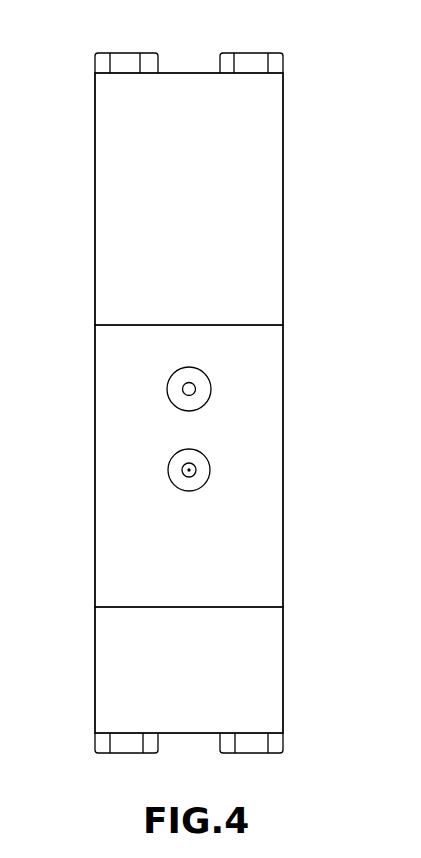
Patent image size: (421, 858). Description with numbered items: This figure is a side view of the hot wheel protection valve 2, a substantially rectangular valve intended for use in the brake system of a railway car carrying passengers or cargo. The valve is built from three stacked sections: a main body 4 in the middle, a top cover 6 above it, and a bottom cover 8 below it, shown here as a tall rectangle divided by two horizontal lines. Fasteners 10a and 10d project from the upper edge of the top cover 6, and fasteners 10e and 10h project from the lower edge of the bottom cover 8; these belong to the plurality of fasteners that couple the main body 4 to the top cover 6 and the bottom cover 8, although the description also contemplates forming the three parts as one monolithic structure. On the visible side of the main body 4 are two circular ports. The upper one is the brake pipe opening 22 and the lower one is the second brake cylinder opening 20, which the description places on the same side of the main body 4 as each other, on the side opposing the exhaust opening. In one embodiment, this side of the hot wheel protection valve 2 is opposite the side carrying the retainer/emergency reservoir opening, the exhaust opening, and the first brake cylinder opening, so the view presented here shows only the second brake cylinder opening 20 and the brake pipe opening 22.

The hot wheel protection valve 2 is at (297, 126).
The main body 4 is at (270, 397).
The top cover 6 is at (268, 222).
The bottom cover 8 is at (273, 668).
The fastener 10a is at (118, 62).
The fastener 10d is at (247, 62).
The fastener 10e is at (120, 745).
The fastener 10h is at (275, 743).
The second brake cylinder opening 20 is at (207, 478).
The brake pipe opening 22 is at (203, 378).